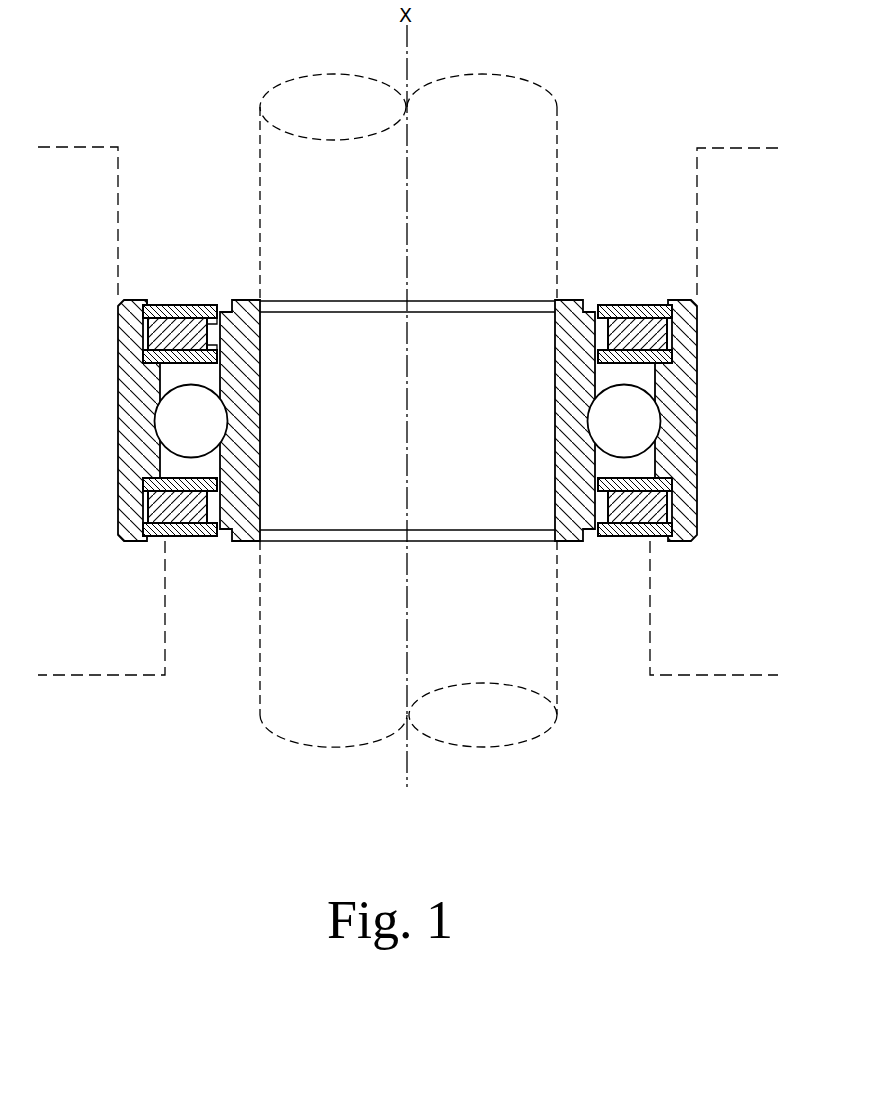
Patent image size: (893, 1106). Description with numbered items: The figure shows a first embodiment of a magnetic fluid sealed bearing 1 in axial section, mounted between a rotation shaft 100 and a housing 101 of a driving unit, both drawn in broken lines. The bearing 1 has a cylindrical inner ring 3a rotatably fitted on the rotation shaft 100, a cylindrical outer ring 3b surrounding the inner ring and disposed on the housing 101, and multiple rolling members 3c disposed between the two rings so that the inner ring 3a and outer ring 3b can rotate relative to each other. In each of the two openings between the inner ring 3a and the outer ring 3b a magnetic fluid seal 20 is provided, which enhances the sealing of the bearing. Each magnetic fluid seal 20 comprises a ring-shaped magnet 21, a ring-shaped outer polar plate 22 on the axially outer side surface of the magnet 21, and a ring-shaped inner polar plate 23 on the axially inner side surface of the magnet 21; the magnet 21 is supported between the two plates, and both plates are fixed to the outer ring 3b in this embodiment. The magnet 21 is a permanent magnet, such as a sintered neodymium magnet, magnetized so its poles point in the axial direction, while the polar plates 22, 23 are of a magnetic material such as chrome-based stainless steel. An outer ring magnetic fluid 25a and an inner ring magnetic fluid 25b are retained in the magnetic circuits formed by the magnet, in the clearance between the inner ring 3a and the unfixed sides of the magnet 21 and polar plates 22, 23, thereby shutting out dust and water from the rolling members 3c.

The magnetic fluid sealed bearing 1 is at (405, 412).
The inner ring 3a is at (565, 410).
The outer ring 3b is at (682, 455).
The rolling members 3c is at (170, 418).
The magnetic fluid seal 20 is at (392, 412).
The magnet 21 is at (648, 305).
The outer polar plate 22 is at (625, 305).
The inner polar plate 23 is at (672, 357).
The outer ring magnetic fluid 25a is at (160, 365).
The inner ring magnetic fluid 25b is at (232, 323).
The rotation shaft 100 is at (500, 75).
The housing 101 is at (80, 145).